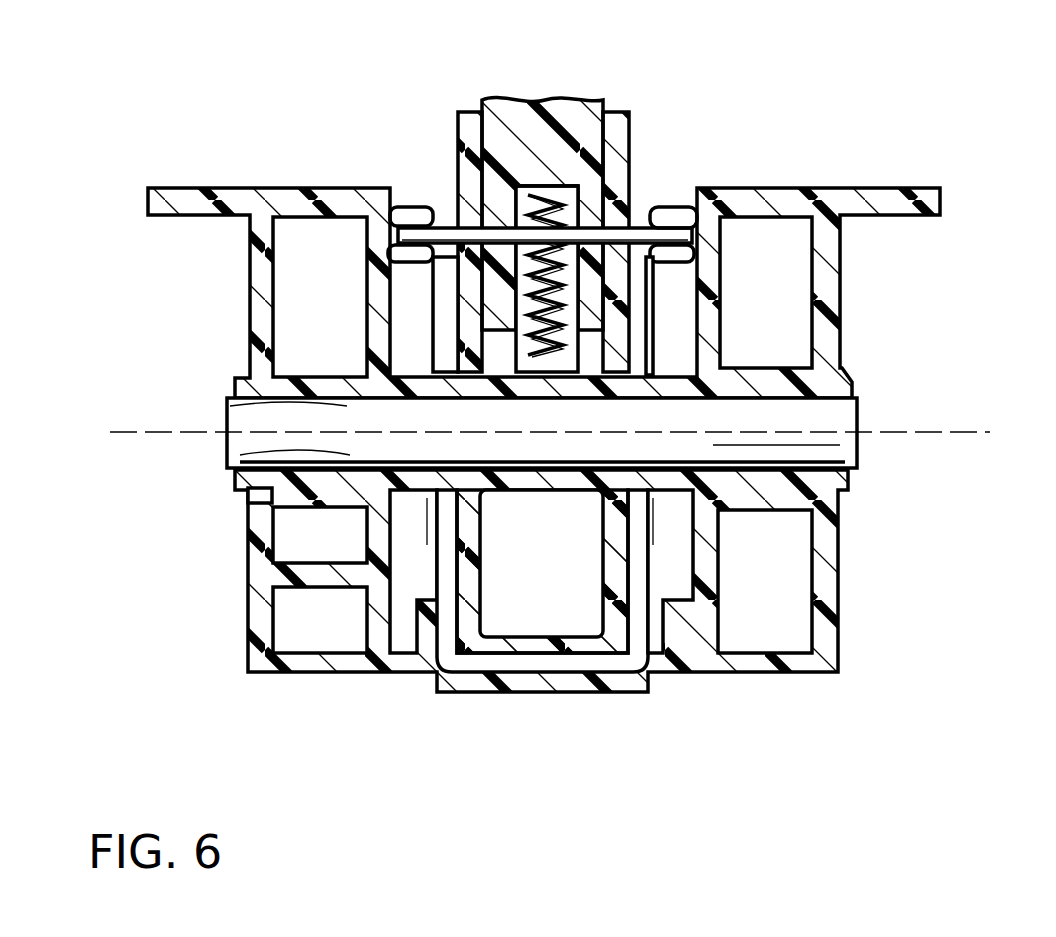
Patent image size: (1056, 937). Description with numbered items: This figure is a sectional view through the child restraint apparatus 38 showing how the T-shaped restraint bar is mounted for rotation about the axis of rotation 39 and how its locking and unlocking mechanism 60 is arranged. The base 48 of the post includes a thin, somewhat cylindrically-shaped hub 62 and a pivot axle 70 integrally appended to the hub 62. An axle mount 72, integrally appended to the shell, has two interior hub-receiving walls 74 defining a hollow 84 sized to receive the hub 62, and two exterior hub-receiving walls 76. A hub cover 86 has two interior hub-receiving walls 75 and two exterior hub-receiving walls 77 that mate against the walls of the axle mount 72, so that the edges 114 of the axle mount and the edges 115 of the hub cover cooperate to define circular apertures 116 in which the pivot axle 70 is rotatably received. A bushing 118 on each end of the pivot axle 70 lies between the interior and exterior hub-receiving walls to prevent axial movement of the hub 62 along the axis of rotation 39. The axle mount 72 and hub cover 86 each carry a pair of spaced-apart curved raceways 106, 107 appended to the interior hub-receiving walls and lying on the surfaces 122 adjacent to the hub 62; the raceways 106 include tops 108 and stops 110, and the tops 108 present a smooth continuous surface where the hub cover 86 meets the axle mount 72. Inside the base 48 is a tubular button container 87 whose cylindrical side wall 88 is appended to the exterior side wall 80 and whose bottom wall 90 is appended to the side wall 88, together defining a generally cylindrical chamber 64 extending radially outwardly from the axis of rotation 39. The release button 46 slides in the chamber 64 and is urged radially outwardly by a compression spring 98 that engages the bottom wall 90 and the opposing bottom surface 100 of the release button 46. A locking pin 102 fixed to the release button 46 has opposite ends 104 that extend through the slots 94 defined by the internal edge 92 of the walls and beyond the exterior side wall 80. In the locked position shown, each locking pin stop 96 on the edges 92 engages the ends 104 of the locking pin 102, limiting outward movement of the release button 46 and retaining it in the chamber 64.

The child restraint apparatus 38 is at (810, 103).
The axis of rotation 39 is at (985, 430).
The release button 46 is at (512, 97).
The base 48 is at (640, 138).
The locking and unlocking mechanism 60 is at (420, 120).
The hub 62 is at (505, 682).
The chamber 64 is at (500, 372).
The pivot axle 70 is at (567, 492).
The axle mount 72 is at (245, 288).
The interior hub-receiving walls 74 is at (372, 250).
The interior hub-receiving walls 75 is at (380, 594).
The exterior hub-receiving walls 76 is at (258, 258).
The exterior hub-receiving walls 77 is at (255, 633).
The exterior side wall 80 is at (640, 640).
The hollow 84 is at (662, 355).
The hub cover 86 is at (285, 682).
The button container 87 is at (455, 138).
The side wall 88 is at (470, 118).
The bottom wall 90 is at (425, 392).
The internal edge 92 is at (460, 368).
The slots 94 is at (470, 305).
The locking pin stop 96 is at (428, 255).
The compression spring 98 is at (545, 360).
The bottom surface 100 is at (555, 185).
The locking pin 102 is at (578, 175).
The ends 104 is at (400, 232).
The raceways 106 is at (668, 332).
The raceways 107 is at (437, 595).
The tops 108 is at (455, 287).
The stops 110 is at (405, 215).
The edges 114 is at (240, 392).
The edges 115 is at (227, 467).
The circular apertures 116 is at (300, 403).
The bushing 118 is at (258, 372).
The surfaces 122 is at (700, 378).